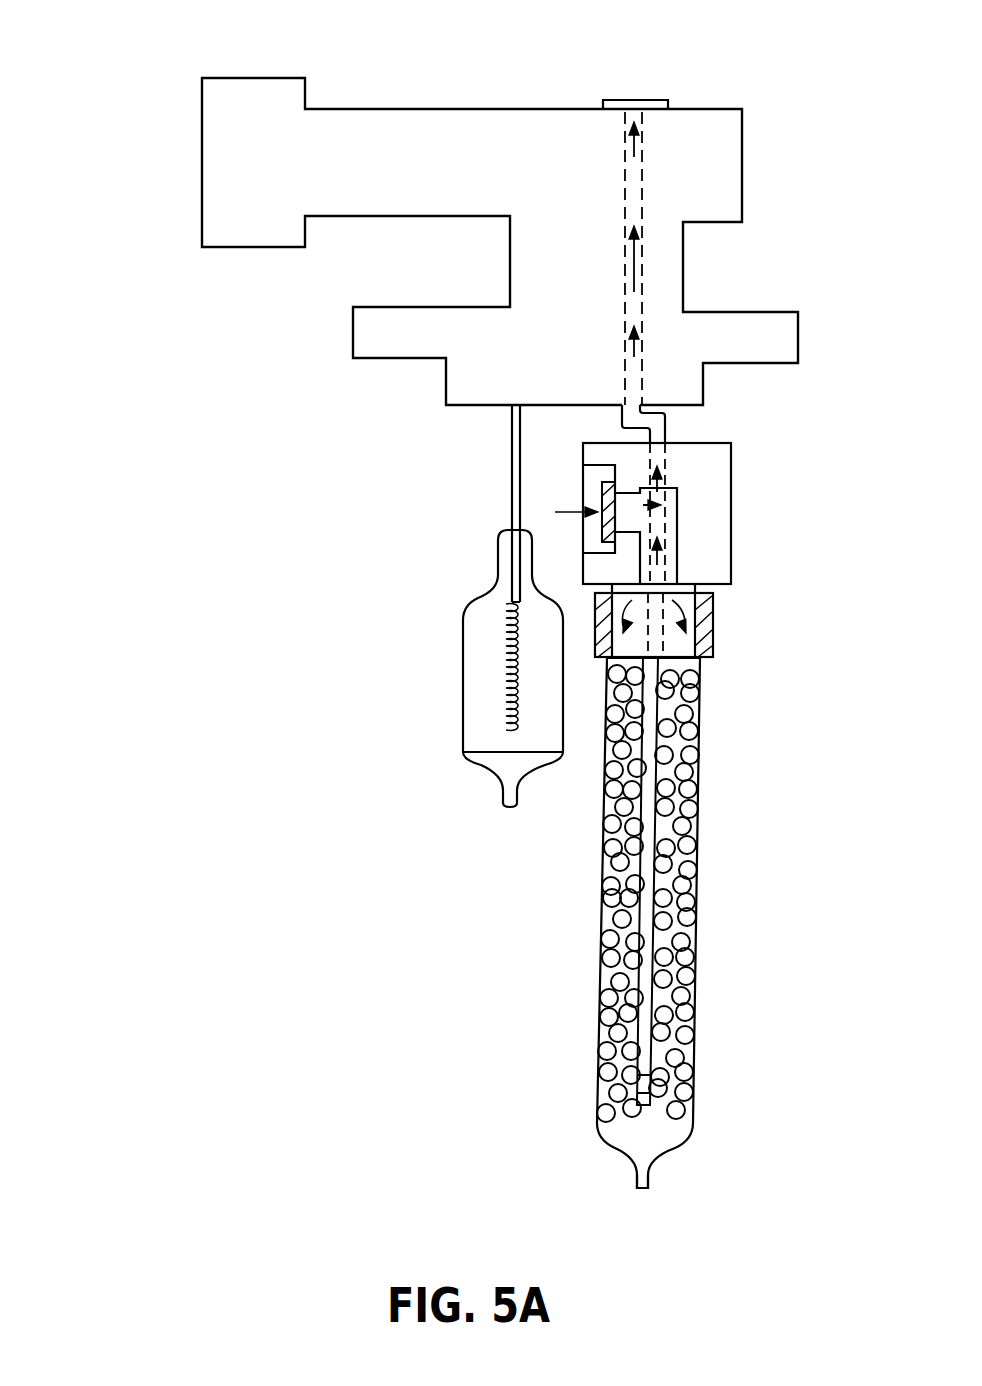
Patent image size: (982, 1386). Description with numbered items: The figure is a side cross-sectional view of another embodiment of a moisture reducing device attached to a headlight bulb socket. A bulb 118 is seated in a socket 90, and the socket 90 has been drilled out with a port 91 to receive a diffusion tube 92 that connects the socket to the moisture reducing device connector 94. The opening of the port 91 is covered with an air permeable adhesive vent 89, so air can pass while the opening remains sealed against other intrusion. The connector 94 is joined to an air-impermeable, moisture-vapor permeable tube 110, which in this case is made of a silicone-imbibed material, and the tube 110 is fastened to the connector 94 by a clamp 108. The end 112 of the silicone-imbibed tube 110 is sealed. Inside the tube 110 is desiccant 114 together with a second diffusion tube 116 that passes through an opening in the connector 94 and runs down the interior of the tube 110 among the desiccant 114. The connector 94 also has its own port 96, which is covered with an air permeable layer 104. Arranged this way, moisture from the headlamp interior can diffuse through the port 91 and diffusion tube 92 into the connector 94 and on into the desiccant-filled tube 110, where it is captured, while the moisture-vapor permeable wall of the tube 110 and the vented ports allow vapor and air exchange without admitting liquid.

The air permeable adhesive vent 89 is at (622, 84).
The socket 90 is at (214, 106).
The port 91 is at (656, 196).
The diffusion tube 92 is at (670, 428).
The moisture reducing device connector 94 is at (742, 508).
The port 96 is at (668, 505).
The air permeable layer 104 is at (590, 491).
The clamp 108 is at (722, 623).
The air-impermeable, moisture-vapor permeable tube 110 is at (587, 1083).
The end of the tube 112 is at (663, 1165).
The desiccant 114 is at (663, 908).
The diffusion tube 116 is at (671, 762).
The bulb 118 is at (452, 701).